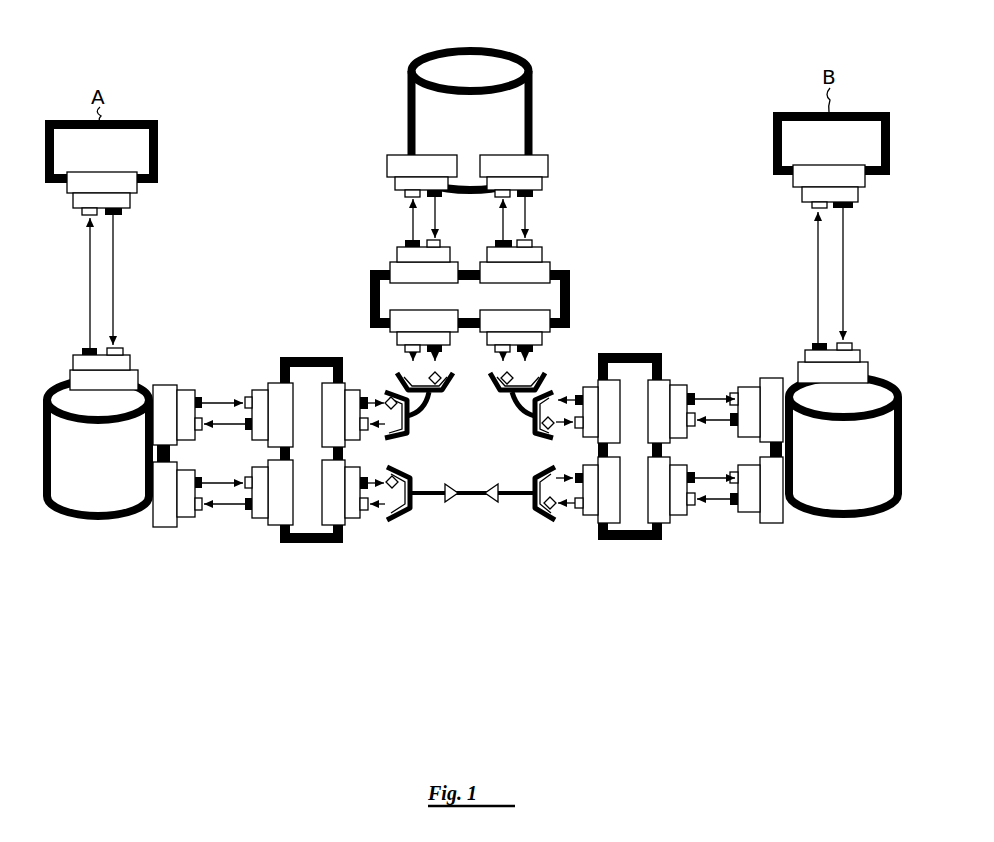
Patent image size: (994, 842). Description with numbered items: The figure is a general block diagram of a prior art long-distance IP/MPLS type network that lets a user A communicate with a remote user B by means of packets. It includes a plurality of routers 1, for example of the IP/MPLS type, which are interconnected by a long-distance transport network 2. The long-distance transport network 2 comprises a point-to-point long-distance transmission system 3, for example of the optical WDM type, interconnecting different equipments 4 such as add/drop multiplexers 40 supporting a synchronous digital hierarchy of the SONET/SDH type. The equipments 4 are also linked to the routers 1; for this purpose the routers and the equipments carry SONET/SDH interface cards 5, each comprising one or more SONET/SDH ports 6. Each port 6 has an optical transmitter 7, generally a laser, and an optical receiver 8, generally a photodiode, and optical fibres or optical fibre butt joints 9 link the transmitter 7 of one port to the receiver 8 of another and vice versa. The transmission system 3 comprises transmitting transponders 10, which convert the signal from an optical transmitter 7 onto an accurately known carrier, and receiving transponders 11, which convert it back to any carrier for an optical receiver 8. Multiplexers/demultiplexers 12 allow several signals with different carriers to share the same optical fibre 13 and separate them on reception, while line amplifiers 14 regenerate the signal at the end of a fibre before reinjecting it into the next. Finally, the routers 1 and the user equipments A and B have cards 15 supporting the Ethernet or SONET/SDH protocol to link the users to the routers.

The router 1 is at (480, 47).
The long-distance transport network 2 is at (692, 642).
The long-distance transmission system 3 is at (511, 414).
The equipment 4 is at (306, 351).
The SONET/SDH interface card 5 is at (270, 382).
The SONET/SDH port 6 is at (278, 397).
The optical transmitter 7 is at (250, 430).
The optical receiver 8 is at (370, 517).
The optical fibre butt joint 9 is at (222, 490).
The transmitting transponder 10 is at (389, 478).
The receiving transponder 11 is at (560, 473).
The multiplexer/demultiplexer 12 is at (412, 488).
The optical fibre 13 is at (427, 498).
The line amplifier 14 is at (493, 500).
The card 15 is at (127, 380).
The add/drop multiplexer 40 is at (517, 273).